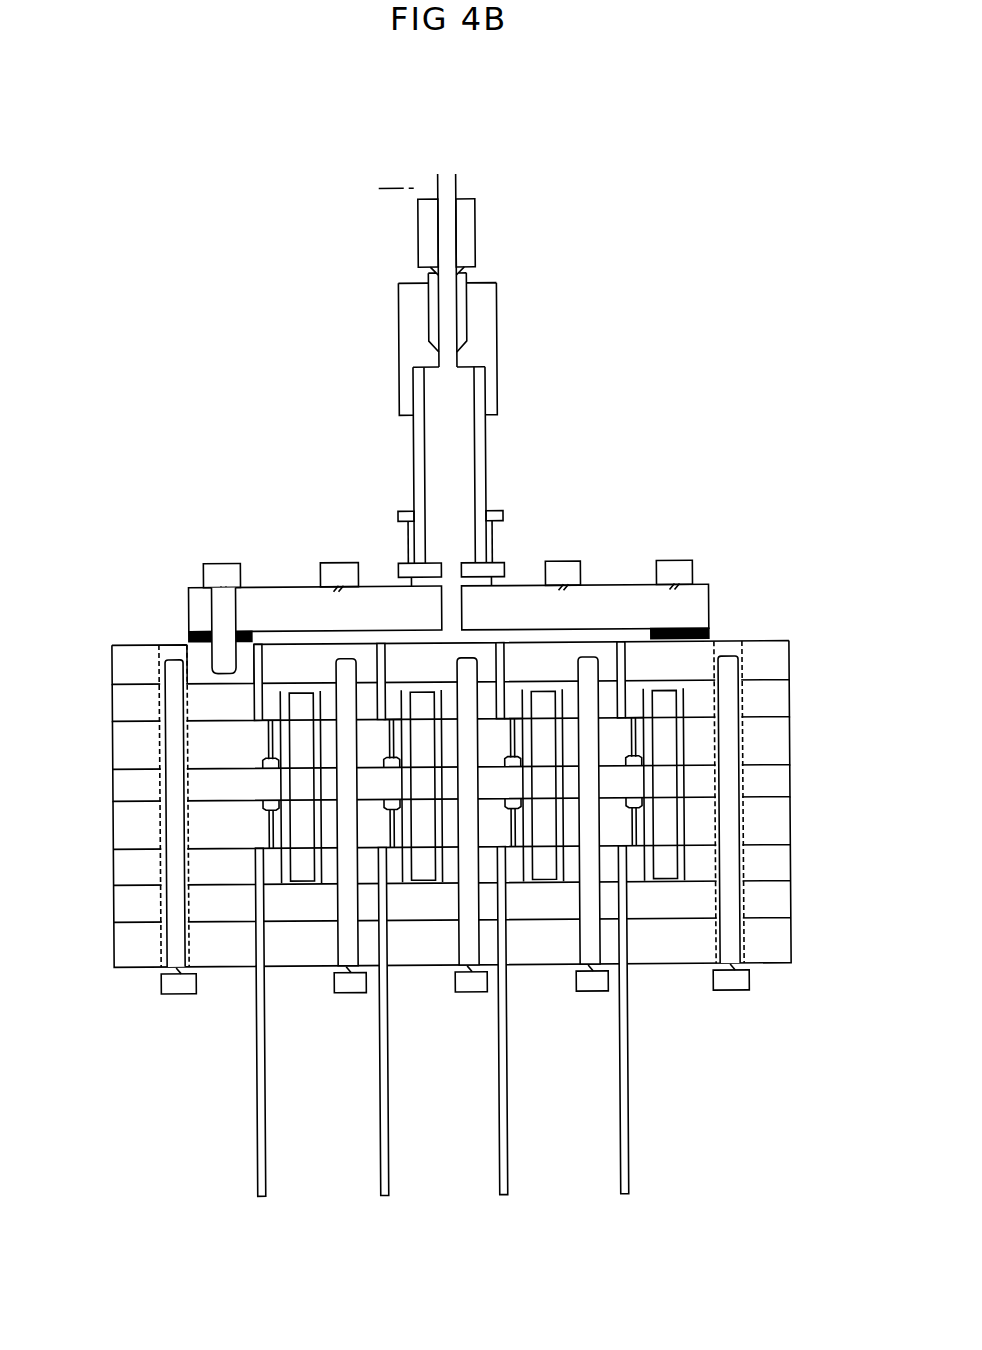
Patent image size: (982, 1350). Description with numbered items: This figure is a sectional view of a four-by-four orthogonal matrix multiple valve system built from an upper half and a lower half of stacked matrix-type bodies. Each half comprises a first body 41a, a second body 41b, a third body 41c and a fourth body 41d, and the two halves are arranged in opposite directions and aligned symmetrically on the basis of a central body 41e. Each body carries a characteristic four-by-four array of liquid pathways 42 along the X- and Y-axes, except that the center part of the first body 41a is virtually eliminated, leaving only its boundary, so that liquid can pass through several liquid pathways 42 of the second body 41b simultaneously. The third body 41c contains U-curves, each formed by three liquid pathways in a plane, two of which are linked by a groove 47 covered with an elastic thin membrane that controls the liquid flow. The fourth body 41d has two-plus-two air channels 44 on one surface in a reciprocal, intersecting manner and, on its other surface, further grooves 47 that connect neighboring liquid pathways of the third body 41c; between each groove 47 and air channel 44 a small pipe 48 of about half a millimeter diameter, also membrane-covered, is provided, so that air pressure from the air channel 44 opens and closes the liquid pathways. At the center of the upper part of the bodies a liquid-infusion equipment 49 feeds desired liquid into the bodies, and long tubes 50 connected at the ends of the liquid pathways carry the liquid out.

The first body 41a is at (710, 625).
The second body 41b is at (200, 667).
The third body 41c is at (700, 705).
The fourth body 41d is at (703, 745).
The central body 41e is at (760, 783).
The liquid pathways 42 is at (258, 633).
The air channels 44 is at (263, 762).
The groove 47 is at (262, 720).
The small pipe 48 is at (266, 740).
The liquid-infusion equipment 49 is at (400, 571).
The long tubes 50 is at (255, 1072).